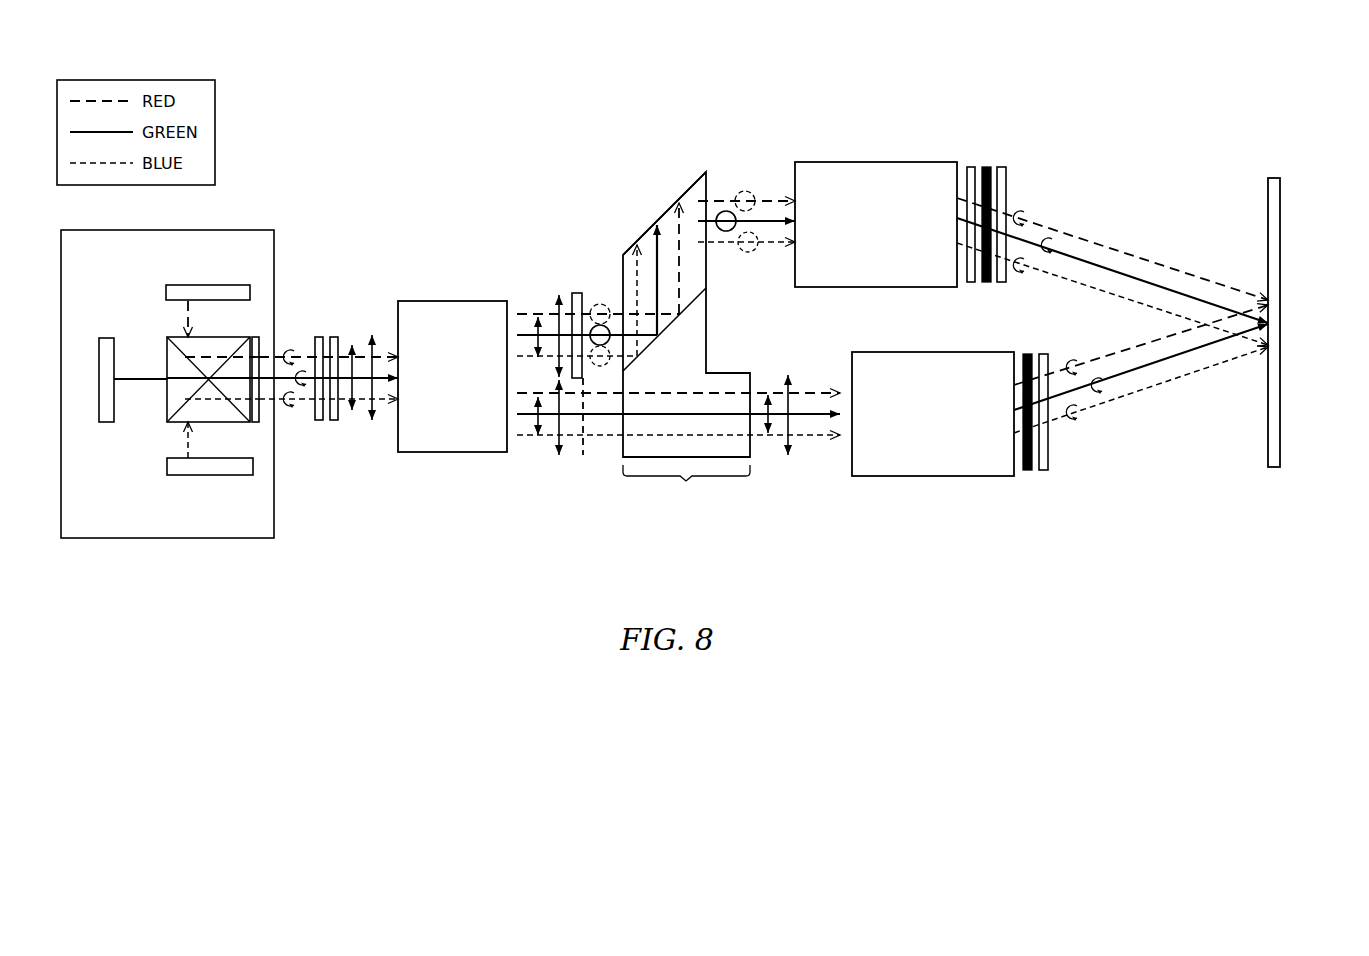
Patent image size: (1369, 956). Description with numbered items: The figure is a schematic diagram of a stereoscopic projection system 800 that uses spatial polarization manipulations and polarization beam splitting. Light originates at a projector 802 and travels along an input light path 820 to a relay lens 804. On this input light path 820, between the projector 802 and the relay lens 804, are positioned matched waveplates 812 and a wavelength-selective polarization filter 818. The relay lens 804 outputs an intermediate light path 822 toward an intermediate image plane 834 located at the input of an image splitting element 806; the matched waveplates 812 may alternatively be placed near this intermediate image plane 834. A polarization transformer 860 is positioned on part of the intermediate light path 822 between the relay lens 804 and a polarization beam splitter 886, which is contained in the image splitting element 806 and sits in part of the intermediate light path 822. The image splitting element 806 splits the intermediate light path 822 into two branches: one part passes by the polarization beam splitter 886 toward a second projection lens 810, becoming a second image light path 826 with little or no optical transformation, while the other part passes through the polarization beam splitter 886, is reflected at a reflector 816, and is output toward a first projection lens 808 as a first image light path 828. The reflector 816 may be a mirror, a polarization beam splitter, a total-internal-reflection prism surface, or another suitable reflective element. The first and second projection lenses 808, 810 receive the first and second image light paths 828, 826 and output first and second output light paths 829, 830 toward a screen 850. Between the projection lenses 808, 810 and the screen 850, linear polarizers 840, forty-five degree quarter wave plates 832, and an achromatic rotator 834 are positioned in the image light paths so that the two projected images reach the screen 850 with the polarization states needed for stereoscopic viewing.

The stereoscopic projection system 800 is at (284, 630).
The projector 802 is at (115, 540).
The relay lens 804 is at (437, 389).
The image splitting element 806 is at (682, 338).
The first projection lens 808 is at (860, 233).
The second projection lens 810 is at (917, 423).
The matched waveplates 812 is at (259, 330).
The reflector 816 is at (643, 233).
The wavelength-selective polarization filter 818 is at (335, 422).
The input light path 820 is at (352, 345).
The intermediate light path 822 is at (533, 313).
The second image light path 826 is at (808, 438).
The first image light path 828 is at (773, 252).
The first output light path 829 is at (1125, 248).
The second output light path 830 is at (1125, 400).
The 45° quarter wave plates 832 is at (1008, 186).
The achromatic rotator 834 is at (580, 448).
The linear polarizers 840 is at (986, 165).
The screen 850 is at (1282, 220).
The polarization transformer 860 is at (577, 293).
The polarization beam splitter 886 is at (672, 346).